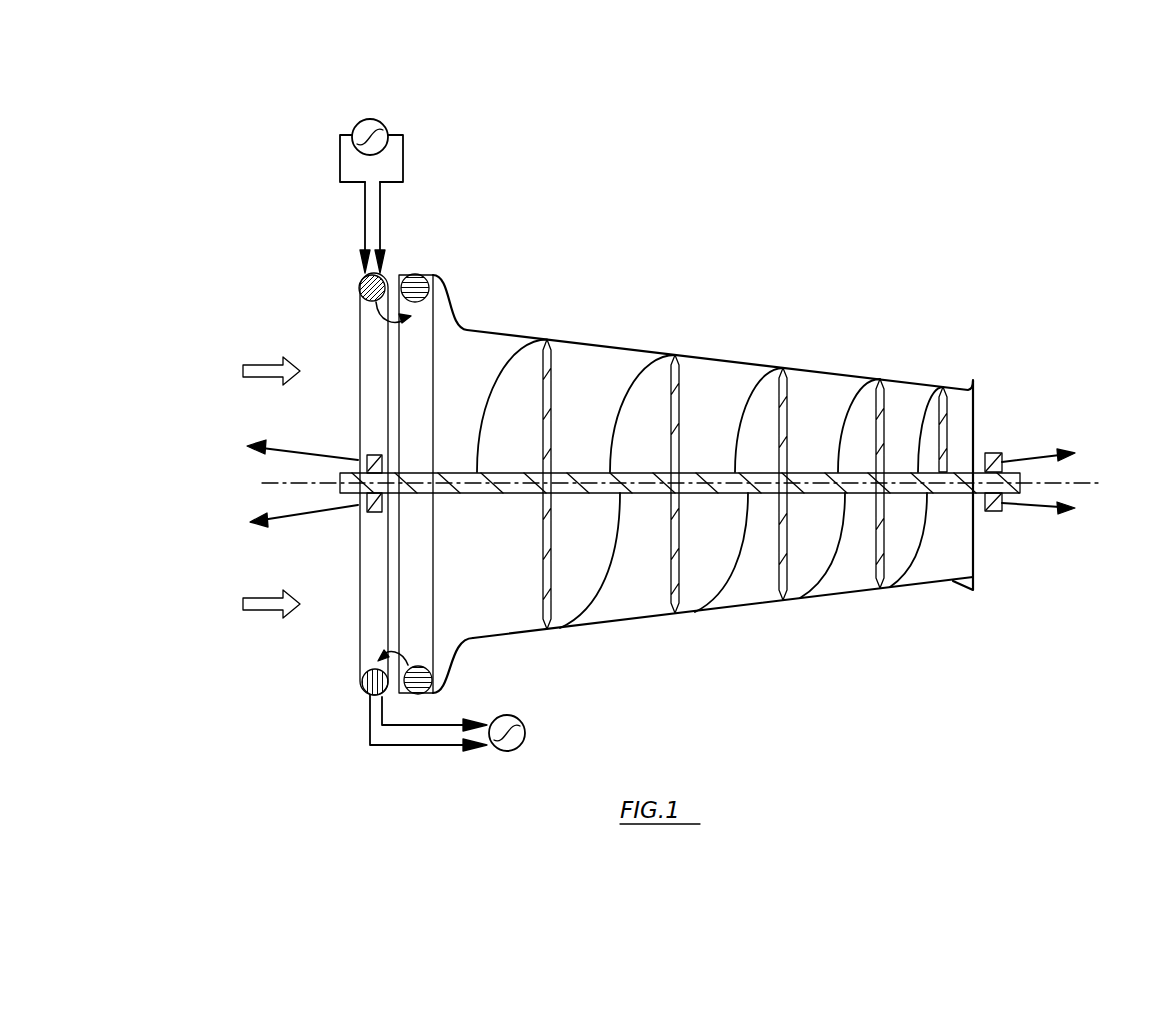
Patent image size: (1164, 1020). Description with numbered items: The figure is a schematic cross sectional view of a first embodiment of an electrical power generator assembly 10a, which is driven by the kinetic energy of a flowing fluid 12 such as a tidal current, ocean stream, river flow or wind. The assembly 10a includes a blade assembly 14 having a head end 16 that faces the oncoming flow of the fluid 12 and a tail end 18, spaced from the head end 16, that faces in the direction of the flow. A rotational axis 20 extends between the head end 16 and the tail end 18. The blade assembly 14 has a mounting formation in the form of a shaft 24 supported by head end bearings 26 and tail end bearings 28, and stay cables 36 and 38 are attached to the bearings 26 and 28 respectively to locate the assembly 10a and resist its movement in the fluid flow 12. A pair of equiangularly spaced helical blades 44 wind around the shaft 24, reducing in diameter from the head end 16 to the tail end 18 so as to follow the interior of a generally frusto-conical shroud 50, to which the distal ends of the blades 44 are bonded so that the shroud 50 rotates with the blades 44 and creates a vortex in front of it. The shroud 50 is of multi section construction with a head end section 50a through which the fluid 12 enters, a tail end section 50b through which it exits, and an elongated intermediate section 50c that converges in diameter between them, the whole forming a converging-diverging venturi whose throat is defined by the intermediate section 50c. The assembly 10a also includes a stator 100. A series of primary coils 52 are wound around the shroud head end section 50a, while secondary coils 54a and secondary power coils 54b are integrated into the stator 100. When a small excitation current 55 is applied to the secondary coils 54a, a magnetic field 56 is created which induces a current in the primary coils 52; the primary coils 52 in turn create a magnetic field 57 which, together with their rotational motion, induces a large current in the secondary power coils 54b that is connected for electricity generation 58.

The electrical power generator assembly 10a is at (700, 468).
The flowing fluid 12 is at (267, 360).
The blade assembly 14 is at (581, 357).
The head end 16 is at (484, 387).
The tail end 18 is at (958, 565).
The rotational axis 20 is at (1087, 478).
The shaft 24 is at (692, 472).
The head end bearings 26 is at (372, 513).
The tail end bearings 28 is at (993, 512).
The stay cables 36 is at (302, 456).
The stay cables 38 is at (1030, 453).
The helical blades 44 is at (633, 397).
The frusto-conical shroud 50 is at (708, 494).
The head end section 50a is at (473, 641).
The tail end section 50b is at (964, 586).
The intermediate section 50c is at (950, 586).
The primary coils 52 is at (420, 282).
The secondary coils 54a is at (365, 280).
The secondary power coils 54b is at (363, 688).
The excitation current 55 is at (402, 161).
The magnetic field 56 is at (382, 322).
The magnetic field 57 is at (393, 652).
The electricity generation 58 is at (522, 723).
The stator 100 is at (358, 427).